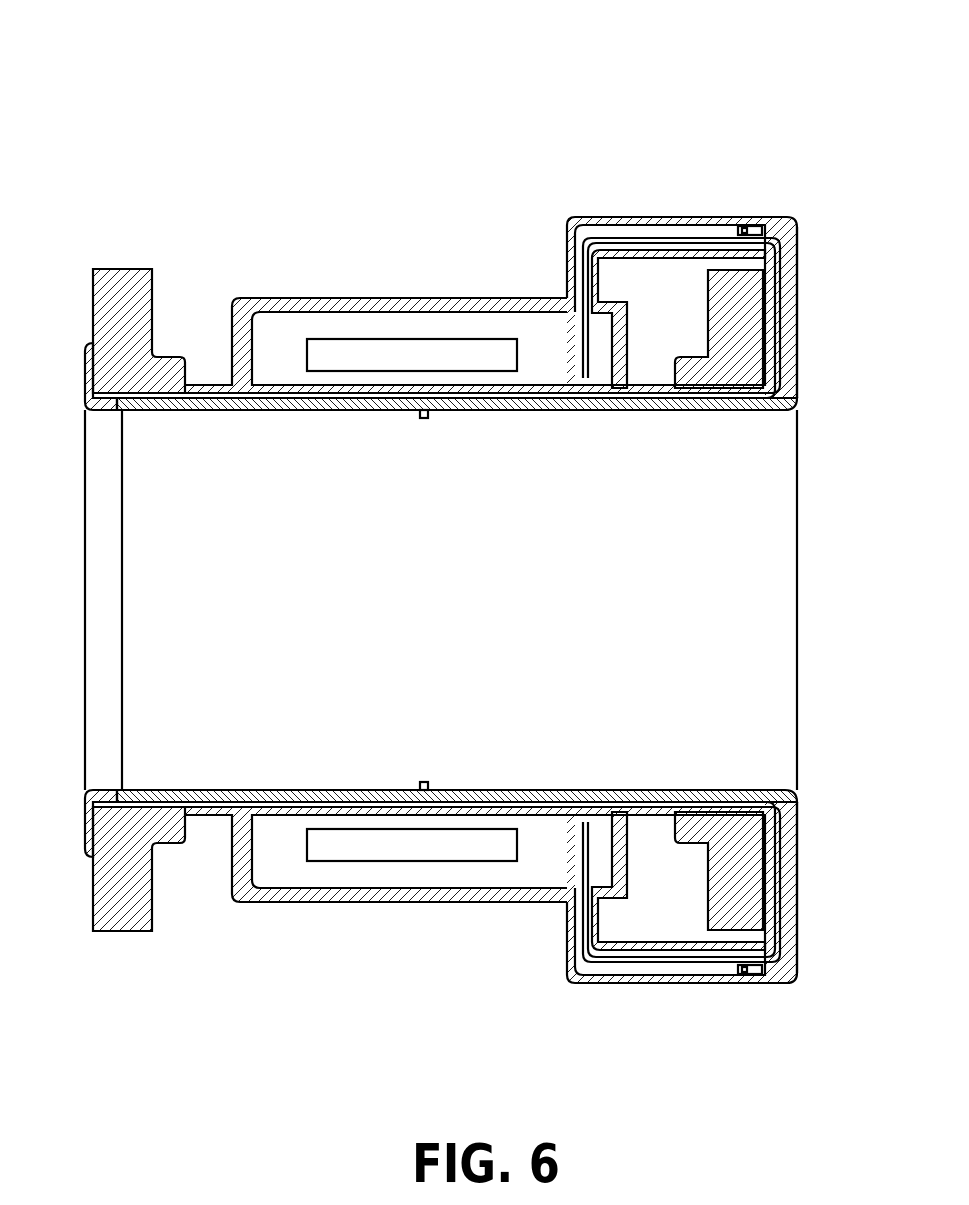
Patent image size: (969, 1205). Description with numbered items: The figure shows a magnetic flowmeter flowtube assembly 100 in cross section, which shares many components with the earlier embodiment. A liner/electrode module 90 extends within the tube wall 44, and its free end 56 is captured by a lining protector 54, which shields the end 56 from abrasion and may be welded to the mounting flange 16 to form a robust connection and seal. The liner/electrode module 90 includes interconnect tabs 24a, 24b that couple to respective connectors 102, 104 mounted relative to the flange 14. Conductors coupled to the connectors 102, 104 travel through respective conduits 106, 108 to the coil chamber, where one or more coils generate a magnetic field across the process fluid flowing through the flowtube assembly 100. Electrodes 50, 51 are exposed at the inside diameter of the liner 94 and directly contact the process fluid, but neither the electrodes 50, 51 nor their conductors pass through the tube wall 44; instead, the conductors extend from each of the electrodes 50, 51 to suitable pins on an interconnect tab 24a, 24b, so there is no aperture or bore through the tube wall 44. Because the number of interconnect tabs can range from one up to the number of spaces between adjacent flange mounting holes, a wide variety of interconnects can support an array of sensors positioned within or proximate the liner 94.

The flowtube assembly 100 is at (474, 549).
The connector 102 is at (738, 224).
The connector 104 is at (740, 983).
The conduit 106 is at (645, 217).
The conduit 108 is at (597, 985).
The flange 14 is at (732, 888).
The mounting flange 16 is at (125, 268).
The interconnect tab 24a is at (800, 290).
The interconnect tab 24b is at (797, 930).
The tube wall 44 is at (208, 385).
The electrode 50 is at (424, 418).
The electrode 51 is at (425, 782).
The lining protector 54 is at (86, 812).
The end 56 is at (87, 386).
The liner/electrode module 90 is at (797, 475).
The liner 94 is at (165, 790).